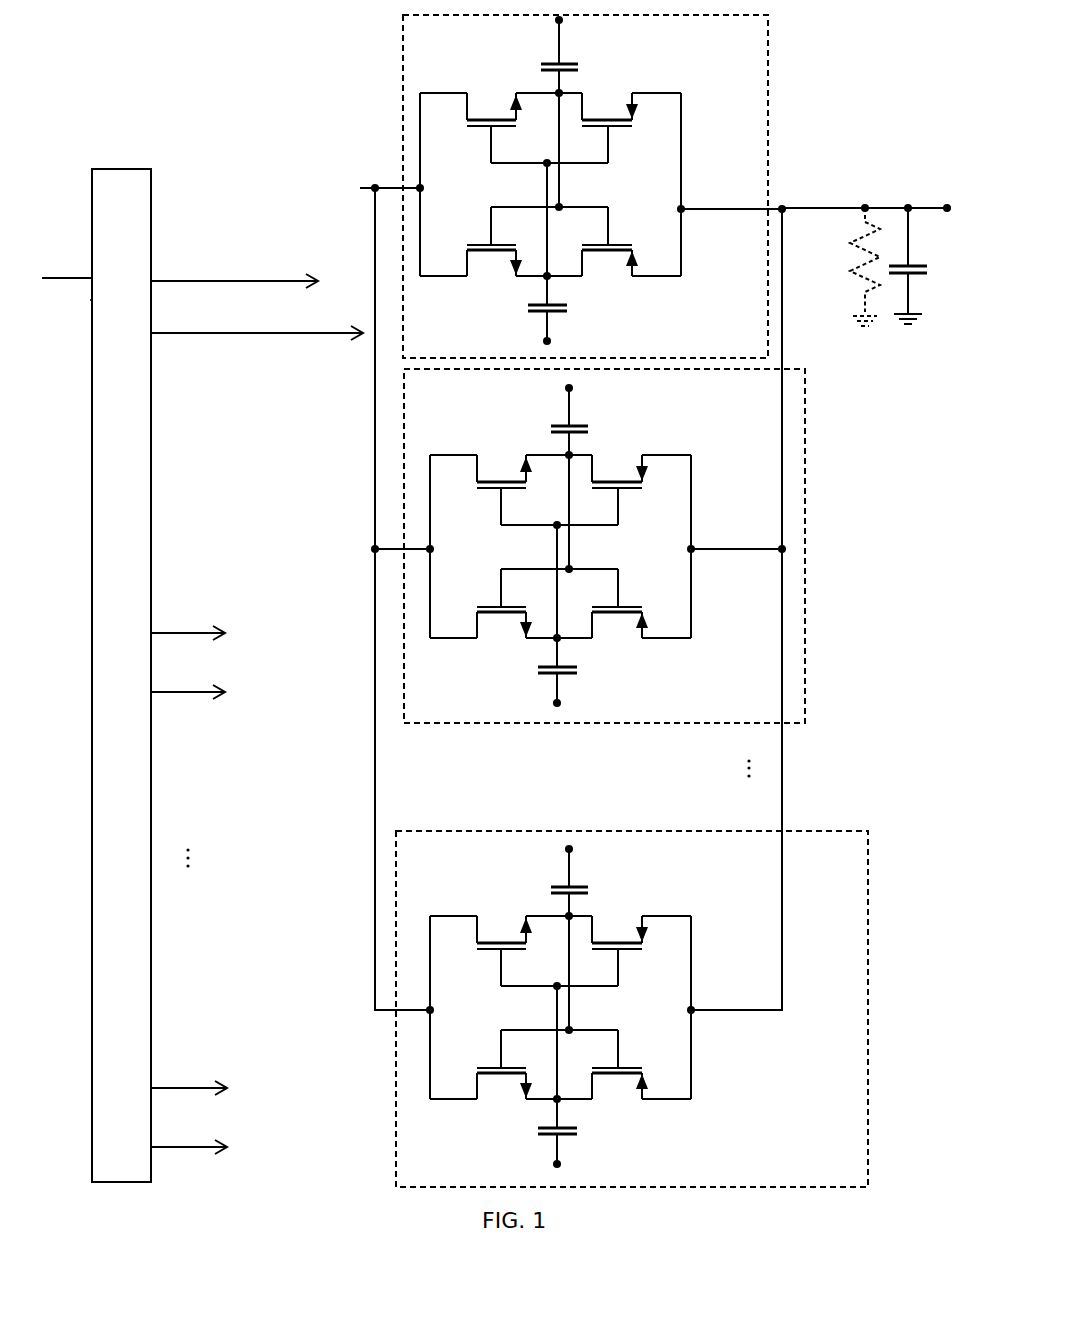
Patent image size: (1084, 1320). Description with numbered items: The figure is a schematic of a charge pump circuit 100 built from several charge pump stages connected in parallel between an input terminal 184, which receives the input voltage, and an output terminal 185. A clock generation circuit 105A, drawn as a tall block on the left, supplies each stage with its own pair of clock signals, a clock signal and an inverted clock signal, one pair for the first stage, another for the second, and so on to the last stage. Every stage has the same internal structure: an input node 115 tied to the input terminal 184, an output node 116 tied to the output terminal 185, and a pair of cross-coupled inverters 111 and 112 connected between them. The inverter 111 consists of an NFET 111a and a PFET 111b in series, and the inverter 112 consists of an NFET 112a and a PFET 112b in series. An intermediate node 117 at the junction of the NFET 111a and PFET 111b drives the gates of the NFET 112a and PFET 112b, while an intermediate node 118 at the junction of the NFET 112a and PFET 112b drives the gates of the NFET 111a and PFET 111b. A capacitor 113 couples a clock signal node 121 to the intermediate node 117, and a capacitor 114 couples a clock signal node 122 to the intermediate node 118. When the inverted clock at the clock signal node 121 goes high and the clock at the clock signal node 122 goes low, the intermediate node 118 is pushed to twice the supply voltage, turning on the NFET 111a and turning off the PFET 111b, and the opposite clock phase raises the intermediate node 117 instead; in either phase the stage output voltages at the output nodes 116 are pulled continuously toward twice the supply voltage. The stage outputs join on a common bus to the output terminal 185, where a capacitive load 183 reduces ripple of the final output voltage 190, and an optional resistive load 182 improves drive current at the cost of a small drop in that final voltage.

The charge pump circuit 100 is at (883, 57).
The clock generation circuit 105A is at (124, 150).
The inverter 111 is at (696, 98).
The N-channel field effect transistor 111a is at (480, 128).
The P-channel field effect transistor 111b is at (630, 128).
The inverter 112 is at (694, 276).
The N-channel field effect transistor 112a is at (481, 244).
The P-channel field effect transistor 112b is at (619, 244).
The capacitor 113 is at (548, 62).
The capacitor 114 is at (561, 312).
The input node 115 is at (424, 188).
The output node 116 is at (684, 209).
The intermediate node 117 is at (556, 93).
The intermediate node 118 is at (554, 280).
The clock signal node 121 is at (557, 20).
The clock signal node 122 is at (546, 342).
The resistive load 182 is at (858, 294).
The capacitive load 183 is at (910, 266).
The input terminal 184 is at (375, 187).
The output terminal 185 is at (947, 206).
The final output voltage 190 is at (835, 177).